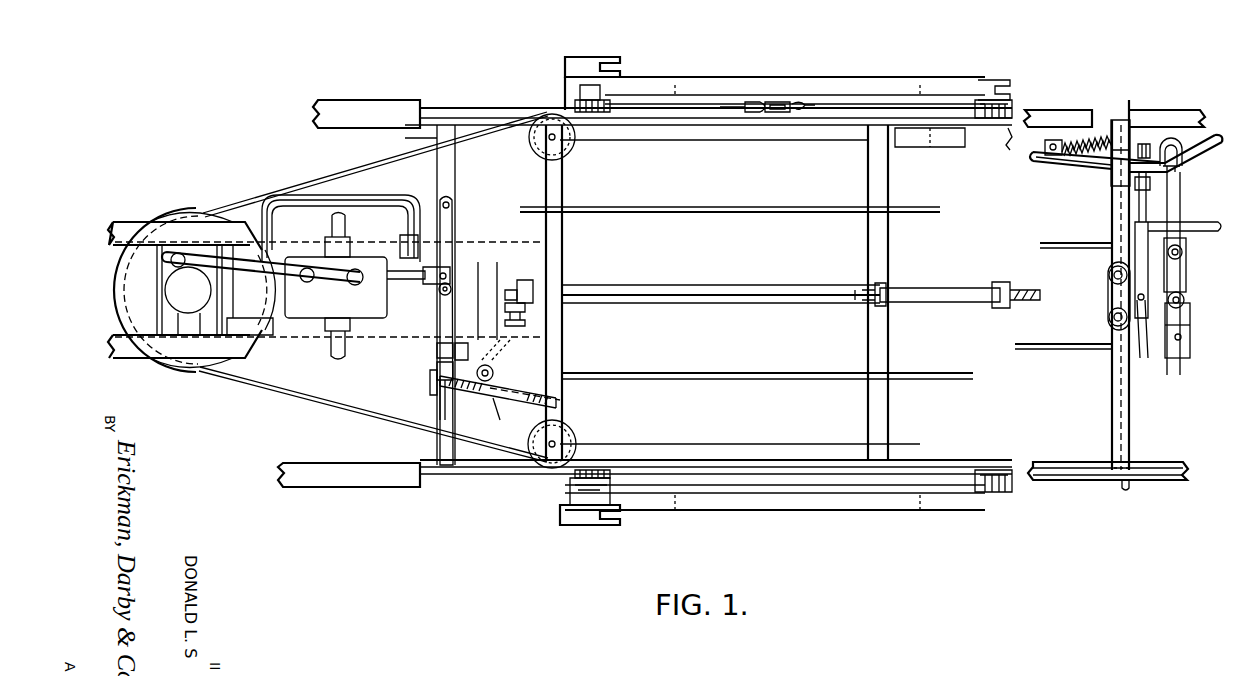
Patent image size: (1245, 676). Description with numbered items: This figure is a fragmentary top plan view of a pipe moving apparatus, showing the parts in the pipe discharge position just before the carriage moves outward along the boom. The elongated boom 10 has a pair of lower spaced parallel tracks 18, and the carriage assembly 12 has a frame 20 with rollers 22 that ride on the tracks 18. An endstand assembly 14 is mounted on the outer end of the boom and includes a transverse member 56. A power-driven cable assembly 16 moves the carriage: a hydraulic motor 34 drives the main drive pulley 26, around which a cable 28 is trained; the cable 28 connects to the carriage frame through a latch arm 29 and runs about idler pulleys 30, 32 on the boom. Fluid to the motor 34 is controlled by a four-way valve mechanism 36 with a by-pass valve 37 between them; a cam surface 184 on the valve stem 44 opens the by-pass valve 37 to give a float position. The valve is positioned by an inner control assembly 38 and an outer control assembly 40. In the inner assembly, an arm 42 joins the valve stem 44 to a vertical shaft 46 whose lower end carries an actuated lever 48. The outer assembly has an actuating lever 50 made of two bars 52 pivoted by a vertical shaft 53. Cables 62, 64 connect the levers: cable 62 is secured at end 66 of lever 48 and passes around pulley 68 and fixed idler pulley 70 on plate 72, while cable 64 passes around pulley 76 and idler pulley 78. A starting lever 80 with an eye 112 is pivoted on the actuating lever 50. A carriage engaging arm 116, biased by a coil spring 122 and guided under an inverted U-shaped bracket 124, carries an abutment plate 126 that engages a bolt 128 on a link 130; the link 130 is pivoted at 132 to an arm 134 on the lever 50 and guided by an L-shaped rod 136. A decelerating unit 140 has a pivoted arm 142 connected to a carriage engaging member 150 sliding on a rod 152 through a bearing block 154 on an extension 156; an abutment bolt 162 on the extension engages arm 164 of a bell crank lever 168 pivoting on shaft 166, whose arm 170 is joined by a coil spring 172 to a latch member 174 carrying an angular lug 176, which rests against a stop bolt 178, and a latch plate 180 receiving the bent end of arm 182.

The boom 10 is at (345, 97).
The carriage assembly 12 is at (772, 289).
The endstand assembly 14 is at (1138, 100).
The cable assembly 16 is at (301, 291).
The tracks 18 is at (450, 107).
The frame 20 is at (780, 78).
The rollers 22 is at (576, 105).
The main drive pulley 26 is at (118, 327).
The cable 28 is at (398, 166).
The latch arm 29 is at (766, 116).
The idler pulley 30 is at (574, 143).
The idler pulley 32 is at (570, 432).
The hydraulic motor 34 is at (160, 289).
The valve mechanism 36 is at (300, 250).
The by-pass valve 37 is at (406, 240).
The inner control assembly 38 is at (563, 246).
The outer control assembly 40 is at (1108, 356).
The arm 42 is at (448, 282).
The valve stem 44 is at (418, 281).
The vertical shaft 46 is at (440, 293).
The actuated lever 48 is at (461, 322).
The actuating lever 50 is at (1186, 270).
The bars 52 is at (1180, 306).
The vertical shaft 53 is at (1182, 312).
The transverse member 56 is at (1115, 212).
The cable 62 is at (758, 207).
The cable 64 is at (727, 380).
The end 66 is at (450, 205).
The pulley 68 is at (1182, 322).
The idler pulley 70 is at (1109, 318).
The plate 72 is at (1099, 292).
The pulley 76 is at (1182, 250).
The idler pulley 78 is at (1110, 273).
The starting lever 80 is at (1181, 195).
The eye 112 is at (1173, 140).
The carriage engaging arm 116 is at (1056, 166).
The coil spring 122 is at (1100, 130).
The inverted U-shaped bracket 124 is at (1112, 186).
The abutment plate 126 is at (1176, 172).
The bolt 128 is at (1150, 204).
The link 130 is at (1135, 238).
The pivotal connection 132 is at (1141, 302).
The arm 134 is at (1184, 290).
The L-shaped rod 136 is at (1143, 144).
The decelerating unit 140 is at (947, 300).
The arm 142 is at (1000, 305).
The carriage engaging member 150 is at (908, 296).
The rod 152 is at (723, 287).
The bearing block 154 is at (530, 284).
The extension 156 is at (553, 303).
The abutment bolt 162 is at (517, 300).
The arm 164 is at (522, 318).
The vertical shaft 166 is at (494, 373).
The bell crank lever 168 is at (491, 396).
The arm 170 is at (560, 392).
The coil spring 172 is at (494, 398).
The latch member 174 is at (437, 386).
The angular lug 176 is at (435, 358).
The stop bolt 178 is at (437, 352).
The latch plate 180 is at (437, 378).
The arm 182 is at (440, 400).
The cam surface 184 is at (382, 281).